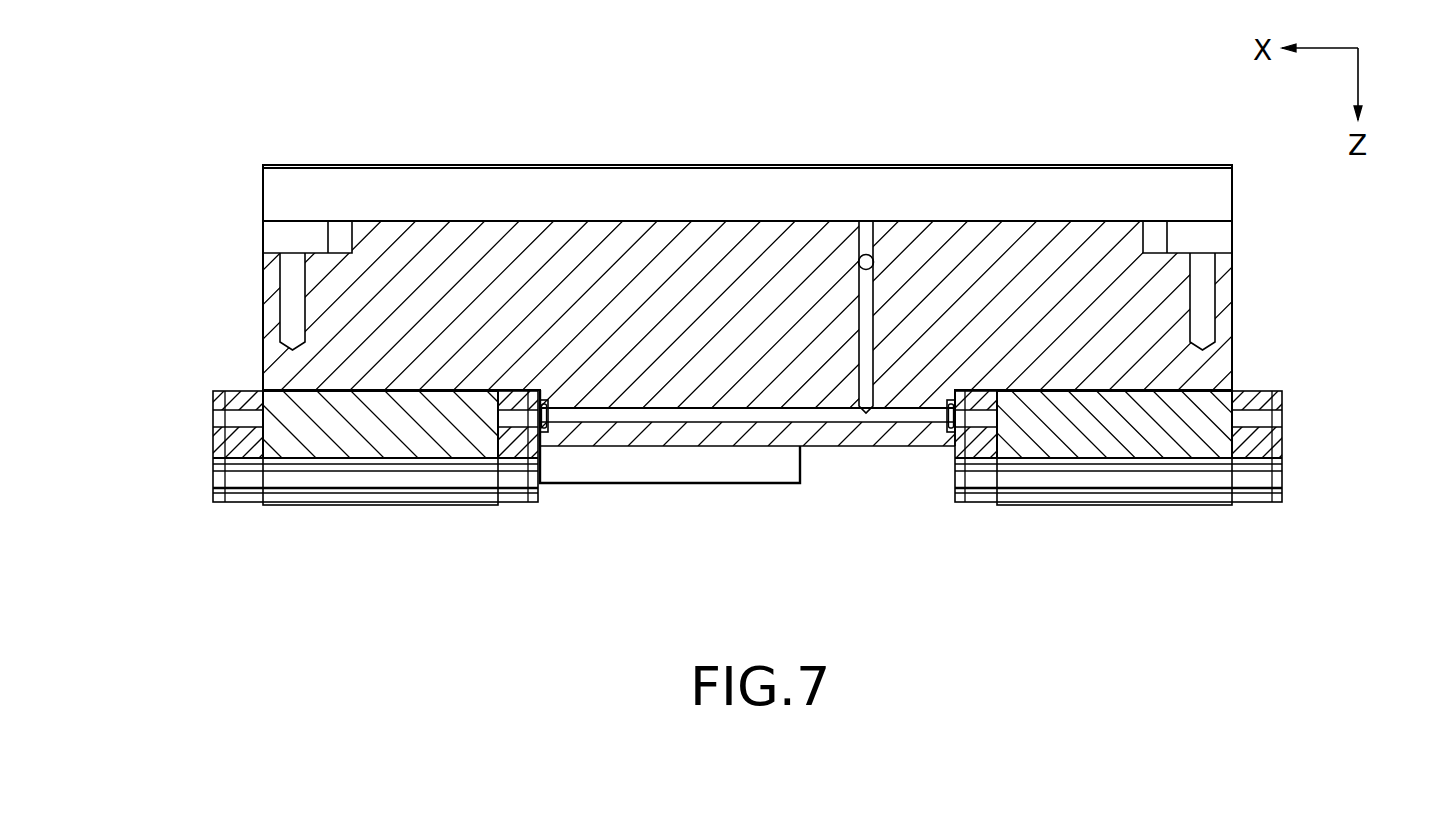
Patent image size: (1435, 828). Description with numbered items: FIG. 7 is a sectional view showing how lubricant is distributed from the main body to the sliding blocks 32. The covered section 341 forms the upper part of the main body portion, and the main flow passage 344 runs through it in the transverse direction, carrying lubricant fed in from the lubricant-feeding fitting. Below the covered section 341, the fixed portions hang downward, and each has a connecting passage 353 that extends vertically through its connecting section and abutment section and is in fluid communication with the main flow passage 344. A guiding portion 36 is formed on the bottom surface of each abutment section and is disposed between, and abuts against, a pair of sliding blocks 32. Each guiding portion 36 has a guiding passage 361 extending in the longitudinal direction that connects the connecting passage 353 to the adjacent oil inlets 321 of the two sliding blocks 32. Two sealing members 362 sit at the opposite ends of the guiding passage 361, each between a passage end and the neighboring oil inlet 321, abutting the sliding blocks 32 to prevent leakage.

The sliding block 32 is at (362, 435).
The oil inlet 321 is at (218, 415).
The covered section 341 is at (753, 250).
The main flow passage 344 is at (882, 252).
The connecting passage 353 is at (857, 360).
The guiding portion 36 is at (870, 435).
The guiding passage 361 is at (707, 437).
The sealing member 362 is at (545, 433).